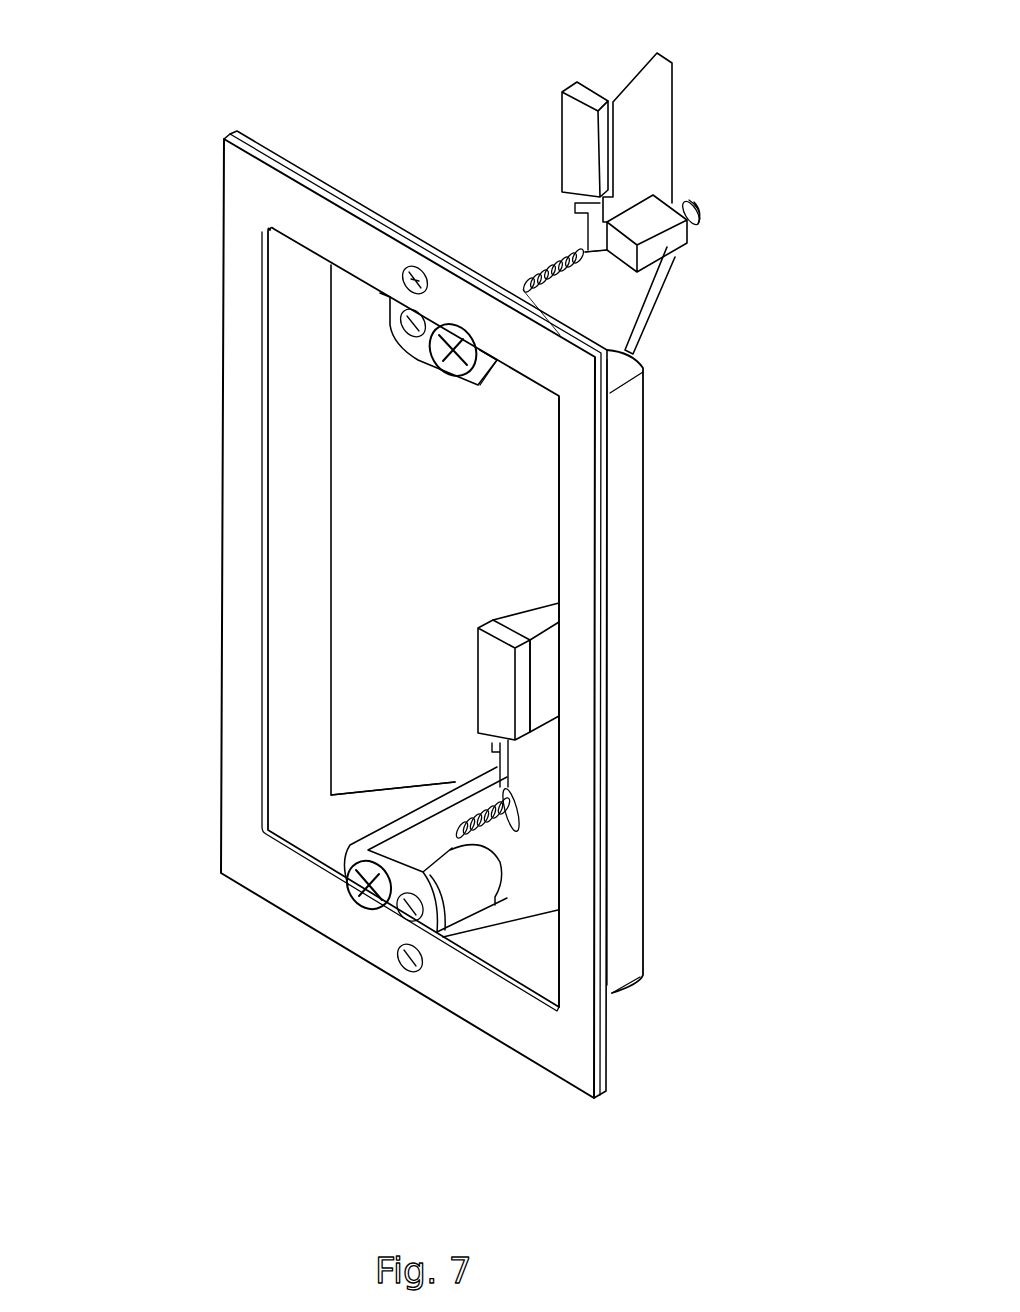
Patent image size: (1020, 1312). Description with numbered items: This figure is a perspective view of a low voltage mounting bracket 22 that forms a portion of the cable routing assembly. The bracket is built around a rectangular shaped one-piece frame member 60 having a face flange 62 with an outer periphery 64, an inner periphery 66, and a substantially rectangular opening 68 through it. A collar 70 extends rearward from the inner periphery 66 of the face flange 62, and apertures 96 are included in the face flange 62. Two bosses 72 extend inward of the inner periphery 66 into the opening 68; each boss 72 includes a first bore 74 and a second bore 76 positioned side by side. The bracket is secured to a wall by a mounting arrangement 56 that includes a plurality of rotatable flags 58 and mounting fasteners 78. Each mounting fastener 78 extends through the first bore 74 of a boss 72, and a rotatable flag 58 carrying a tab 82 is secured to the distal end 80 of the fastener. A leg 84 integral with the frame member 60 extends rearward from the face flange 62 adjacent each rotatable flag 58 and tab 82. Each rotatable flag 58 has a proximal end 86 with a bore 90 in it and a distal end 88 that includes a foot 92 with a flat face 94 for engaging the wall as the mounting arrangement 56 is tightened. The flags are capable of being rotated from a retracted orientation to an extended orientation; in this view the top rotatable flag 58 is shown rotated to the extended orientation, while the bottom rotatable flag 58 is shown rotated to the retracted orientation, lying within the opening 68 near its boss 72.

The low voltage mounting bracket 22 is at (146, 197).
The mounting arrangement 56 is at (520, 120).
The rotatable flag 58 is at (673, 112).
The frame member 60 is at (256, 130).
The face flange 62 is at (578, 702).
The outer periphery 64 is at (612, 730).
The inner periphery 66 is at (273, 530).
The rectangular opening 68 is at (356, 636).
The collar 70 is at (645, 530).
The boss 72 is at (433, 372).
The first bore 74 is at (352, 867).
The second bore 76 is at (400, 912).
The mounting fastener 78 is at (437, 347).
The distal end 80 is at (693, 205).
The tab 82 is at (671, 252).
The leg 84 is at (570, 292).
The proximal end 86 is at (668, 260).
The distal end 88 is at (624, 76).
The bore 90 is at (578, 251).
The foot 92 is at (607, 147).
The flat face 94 is at (543, 411).
The aperture 96 is at (405, 283).